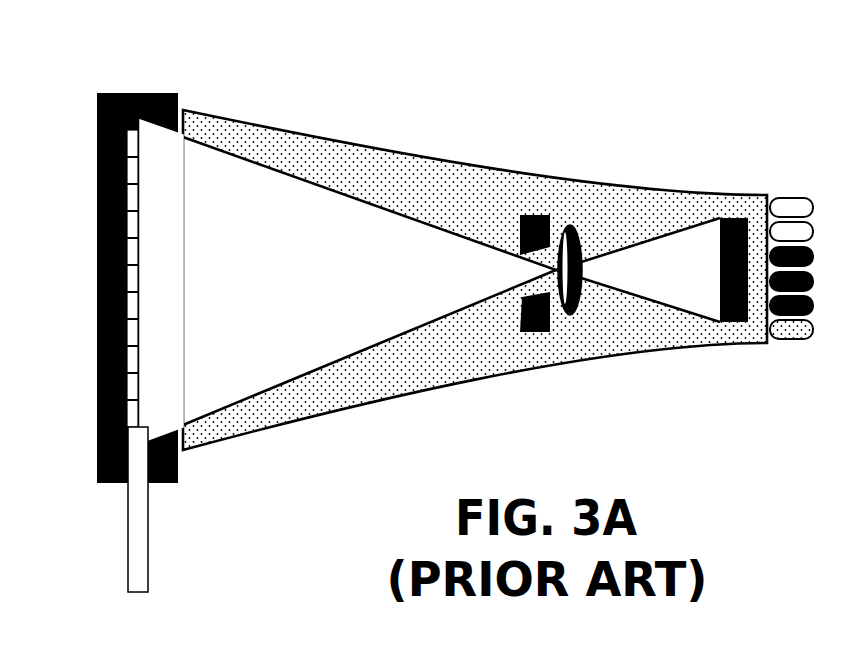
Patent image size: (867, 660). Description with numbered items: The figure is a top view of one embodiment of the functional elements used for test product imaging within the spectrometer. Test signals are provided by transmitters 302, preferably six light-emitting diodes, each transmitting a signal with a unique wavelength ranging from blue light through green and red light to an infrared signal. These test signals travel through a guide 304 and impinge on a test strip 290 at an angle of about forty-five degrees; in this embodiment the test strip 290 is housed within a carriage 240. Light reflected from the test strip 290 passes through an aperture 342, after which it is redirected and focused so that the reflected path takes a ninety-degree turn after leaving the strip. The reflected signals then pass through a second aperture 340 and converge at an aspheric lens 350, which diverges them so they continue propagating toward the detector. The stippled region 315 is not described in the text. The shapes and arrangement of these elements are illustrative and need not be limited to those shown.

The carriage 240 is at (163, 483).
The test strip 290 is at (123, 130).
The transmitters 302 is at (790, 192).
The guide 304 is at (397, 147).
The stray light region 315 is at (243, 145).
The aperture 340 is at (522, 190).
The aperture 342 is at (130, 308).
The aspheric lens 350 is at (567, 223).